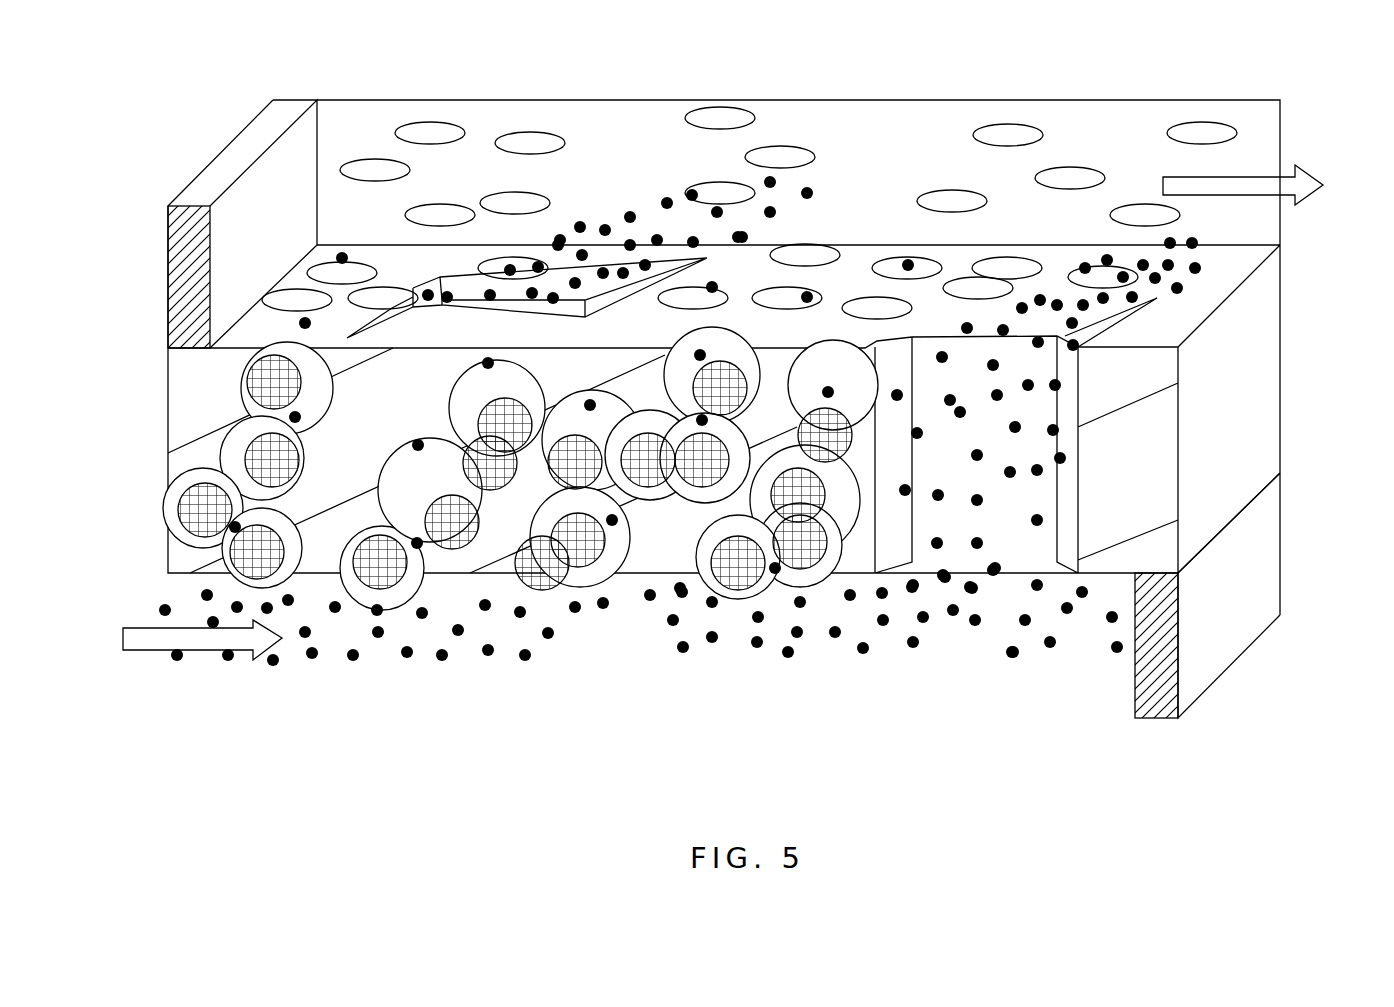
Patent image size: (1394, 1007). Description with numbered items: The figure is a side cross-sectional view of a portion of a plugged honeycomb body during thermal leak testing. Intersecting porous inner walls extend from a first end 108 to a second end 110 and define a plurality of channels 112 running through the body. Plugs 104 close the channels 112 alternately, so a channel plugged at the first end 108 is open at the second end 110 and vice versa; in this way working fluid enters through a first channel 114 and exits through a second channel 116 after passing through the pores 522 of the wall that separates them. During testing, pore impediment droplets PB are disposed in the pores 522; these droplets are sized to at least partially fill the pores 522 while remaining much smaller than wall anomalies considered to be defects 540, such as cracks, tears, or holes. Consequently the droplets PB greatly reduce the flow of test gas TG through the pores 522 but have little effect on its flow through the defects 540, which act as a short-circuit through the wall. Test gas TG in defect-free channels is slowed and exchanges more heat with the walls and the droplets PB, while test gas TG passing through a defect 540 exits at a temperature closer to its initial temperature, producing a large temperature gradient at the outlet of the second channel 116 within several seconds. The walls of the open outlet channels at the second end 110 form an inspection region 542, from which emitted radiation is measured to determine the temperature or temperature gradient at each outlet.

The plugs 104 is at (178, 283).
The first end 108 is at (95, 248).
The second end 110 is at (1312, 478).
The channels 112 is at (600, 207).
The first channel 114 is at (143, 595).
The second channel 116 is at (1290, 148).
The pores 522 is at (877, 307).
The defects 540 is at (463, 285).
The inspection region 542 is at (1200, 298).
The test gas TG is at (688, 197).
The pore impediment droplets PB is at (380, 590).